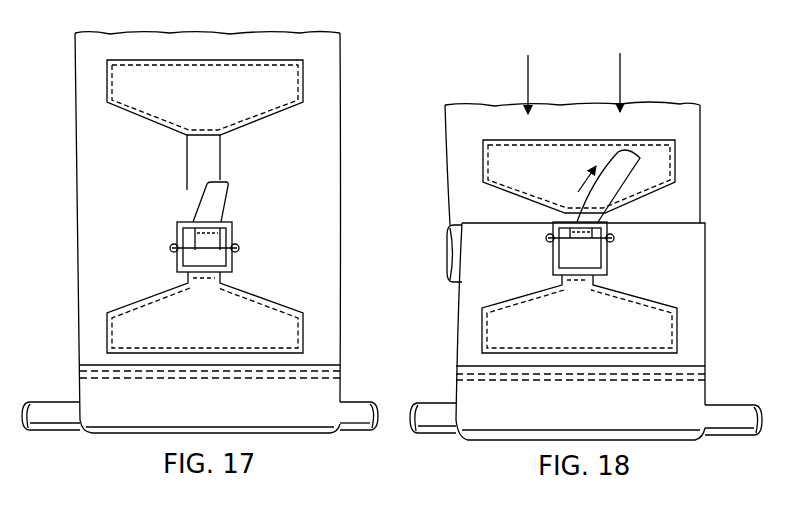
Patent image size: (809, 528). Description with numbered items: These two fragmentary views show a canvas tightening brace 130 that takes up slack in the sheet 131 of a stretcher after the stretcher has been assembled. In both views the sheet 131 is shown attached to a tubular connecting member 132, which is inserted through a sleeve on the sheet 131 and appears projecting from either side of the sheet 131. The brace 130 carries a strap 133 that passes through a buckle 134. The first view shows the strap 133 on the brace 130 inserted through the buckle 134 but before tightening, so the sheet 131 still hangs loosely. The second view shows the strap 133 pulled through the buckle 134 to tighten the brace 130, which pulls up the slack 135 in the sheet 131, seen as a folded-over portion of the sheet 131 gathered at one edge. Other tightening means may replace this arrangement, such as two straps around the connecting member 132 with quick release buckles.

In FIG. 17, the canvas tightening brace 130 is at (258, 208).
In FIG. 18, the canvas tightening brace 130 is at (669, 212).
In FIG. 17, the sheet 131 is at (208, 233).
In FIG. 18, the sheet 131 is at (575, 272).
In FIG. 17, the tubular connecting member 132 is at (367, 412).
In FIG. 18, the tubular connecting member 132 is at (423, 407).
In FIG. 17, the strap 133 is at (207, 153).
In FIG. 18, the strap 133 is at (610, 173).
In FIG. 17, the buckle 134 is at (232, 262).
In FIG. 18, the buckle 134 is at (607, 262).
In FIG. 18, the slack 135 is at (450, 250).